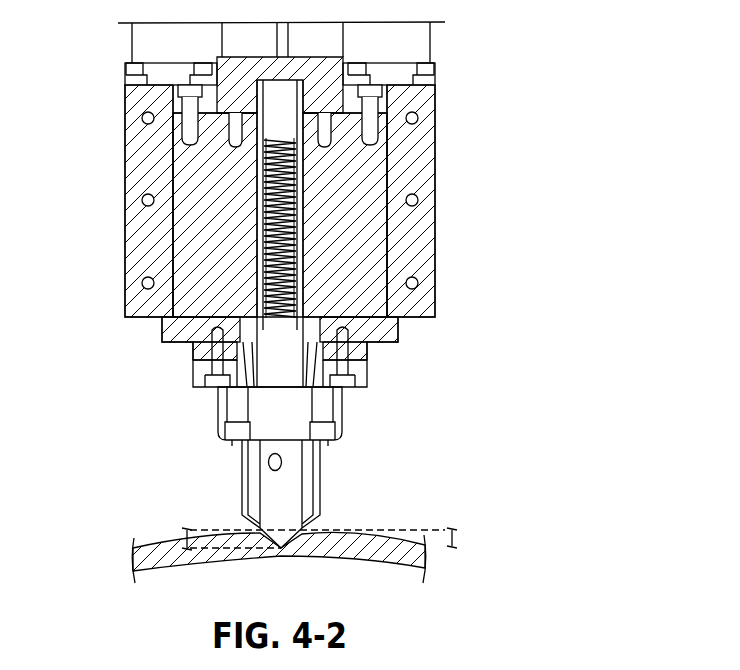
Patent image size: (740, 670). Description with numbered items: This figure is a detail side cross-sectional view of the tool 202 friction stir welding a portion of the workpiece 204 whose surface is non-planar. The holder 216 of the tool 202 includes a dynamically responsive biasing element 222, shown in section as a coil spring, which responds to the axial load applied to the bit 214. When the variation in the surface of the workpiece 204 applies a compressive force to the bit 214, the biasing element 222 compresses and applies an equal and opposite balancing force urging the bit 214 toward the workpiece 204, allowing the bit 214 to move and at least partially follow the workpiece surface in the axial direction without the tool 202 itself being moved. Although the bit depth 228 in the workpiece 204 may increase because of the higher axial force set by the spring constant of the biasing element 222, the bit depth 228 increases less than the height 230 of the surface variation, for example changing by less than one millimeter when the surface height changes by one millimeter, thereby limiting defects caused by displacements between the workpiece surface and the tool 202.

The holder 216 is at (122, 41).
The tool 202 is at (616, 78).
The biasing element 222 is at (318, 245).
The workpiece 204 is at (135, 558).
The bit 214 is at (330, 531).
The bit depth 228 is at (187, 542).
The height 230 is at (455, 543).